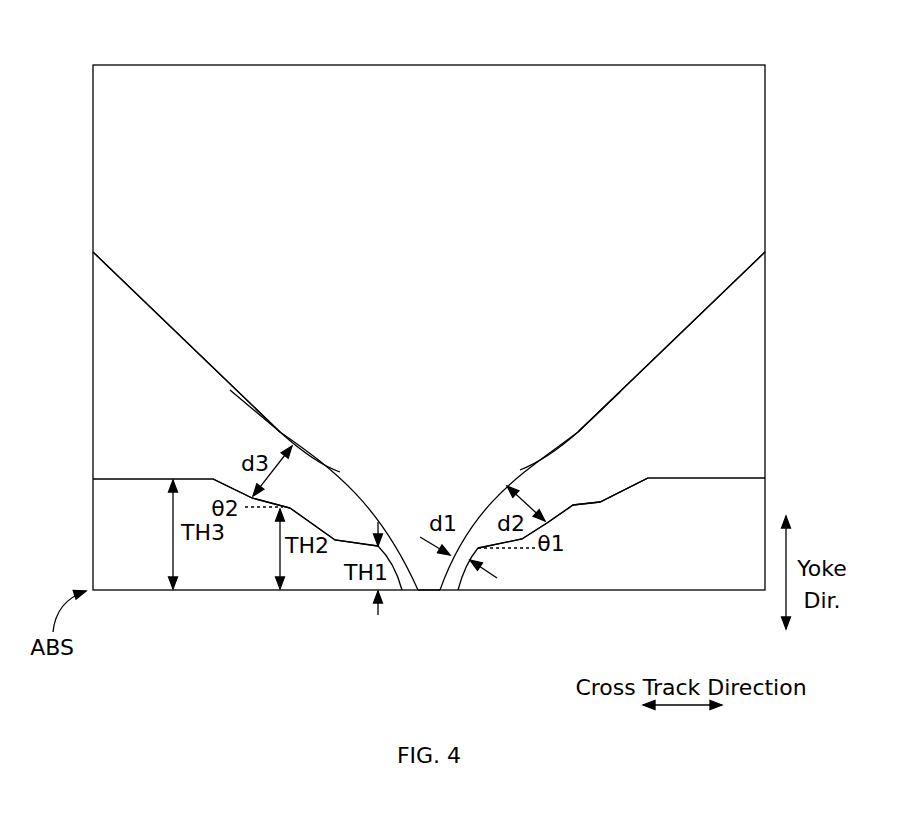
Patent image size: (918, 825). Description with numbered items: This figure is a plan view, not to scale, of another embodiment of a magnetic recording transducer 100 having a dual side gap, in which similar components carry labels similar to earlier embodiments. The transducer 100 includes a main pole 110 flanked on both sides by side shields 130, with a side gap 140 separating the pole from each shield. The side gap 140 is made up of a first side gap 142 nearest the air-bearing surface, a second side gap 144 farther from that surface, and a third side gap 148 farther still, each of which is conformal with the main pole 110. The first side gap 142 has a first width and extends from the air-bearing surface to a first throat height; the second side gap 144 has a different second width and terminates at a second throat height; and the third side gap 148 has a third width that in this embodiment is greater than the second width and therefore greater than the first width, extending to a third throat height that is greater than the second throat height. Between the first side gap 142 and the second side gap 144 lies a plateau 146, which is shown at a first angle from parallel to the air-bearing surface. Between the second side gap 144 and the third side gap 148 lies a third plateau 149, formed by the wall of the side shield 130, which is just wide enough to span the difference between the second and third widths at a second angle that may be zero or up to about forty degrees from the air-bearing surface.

The transducer 100 is at (403, 43).
The main pole 110 is at (429, 421).
The side shields 130 is at (429, 534).
The side gap 140 is at (233, 448).
The first side gap 142 is at (413, 593).
The second side gap 144 is at (543, 482).
The plateau 146 is at (338, 547).
The third side gap 148 is at (230, 475).
The third plateau 149 is at (263, 513).